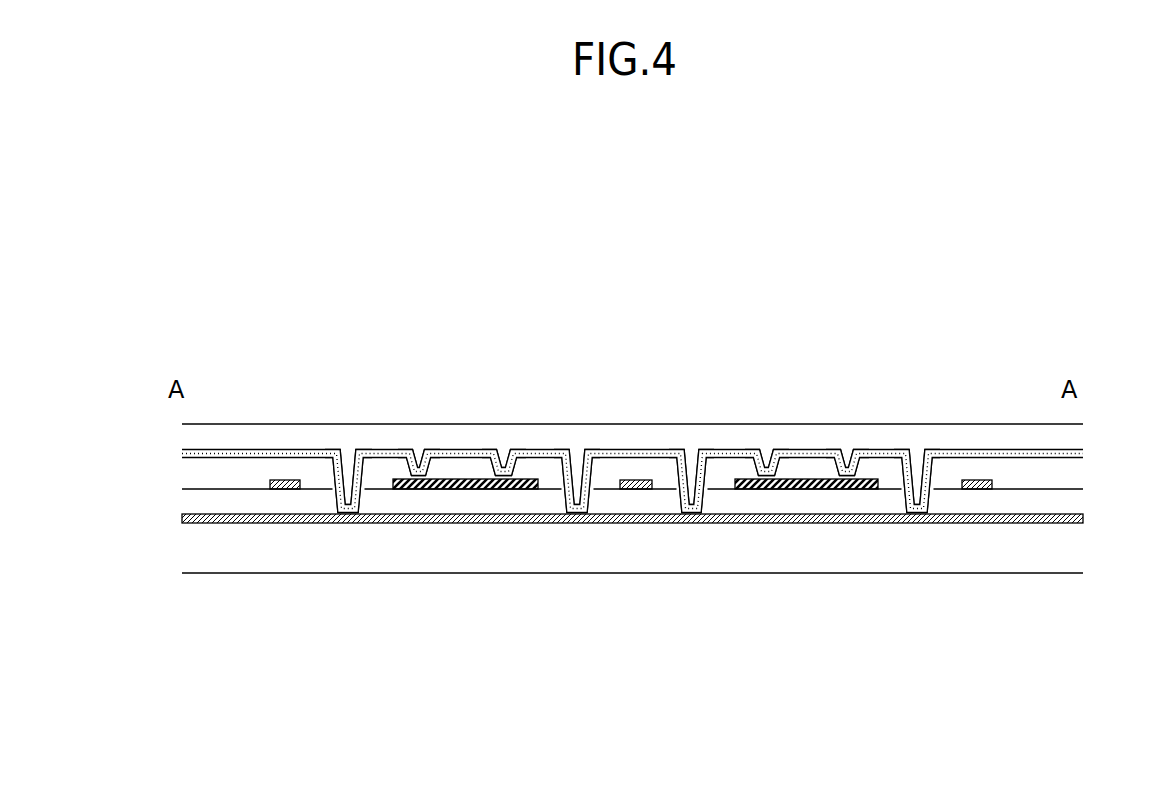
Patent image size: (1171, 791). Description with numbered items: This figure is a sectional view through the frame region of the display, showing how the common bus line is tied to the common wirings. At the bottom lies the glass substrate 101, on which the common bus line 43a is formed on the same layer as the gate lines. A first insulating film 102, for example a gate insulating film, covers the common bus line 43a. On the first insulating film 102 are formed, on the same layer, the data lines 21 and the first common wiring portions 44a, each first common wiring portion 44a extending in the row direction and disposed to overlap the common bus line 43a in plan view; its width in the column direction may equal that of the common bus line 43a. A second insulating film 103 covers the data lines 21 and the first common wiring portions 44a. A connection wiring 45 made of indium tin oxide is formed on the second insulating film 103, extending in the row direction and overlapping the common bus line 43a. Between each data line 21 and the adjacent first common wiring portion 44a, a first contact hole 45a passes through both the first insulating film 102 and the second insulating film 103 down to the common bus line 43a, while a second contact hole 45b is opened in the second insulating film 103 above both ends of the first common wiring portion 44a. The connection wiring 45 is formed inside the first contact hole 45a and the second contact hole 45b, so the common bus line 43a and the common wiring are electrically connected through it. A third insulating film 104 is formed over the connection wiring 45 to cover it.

The data line 21 is at (287, 489).
The common bus line 43a is at (737, 523).
The first common wiring portion 44a is at (467, 489).
The connection wiring 45 is at (633, 451).
The first contact hole 45a is at (342, 383).
The second contact hole 45b is at (415, 383).
The glass substrate 101 is at (1072, 552).
The first insulating film 102 is at (1072, 502).
The second insulating film 103 is at (1073, 473).
The third insulating film 104 is at (1076, 436).